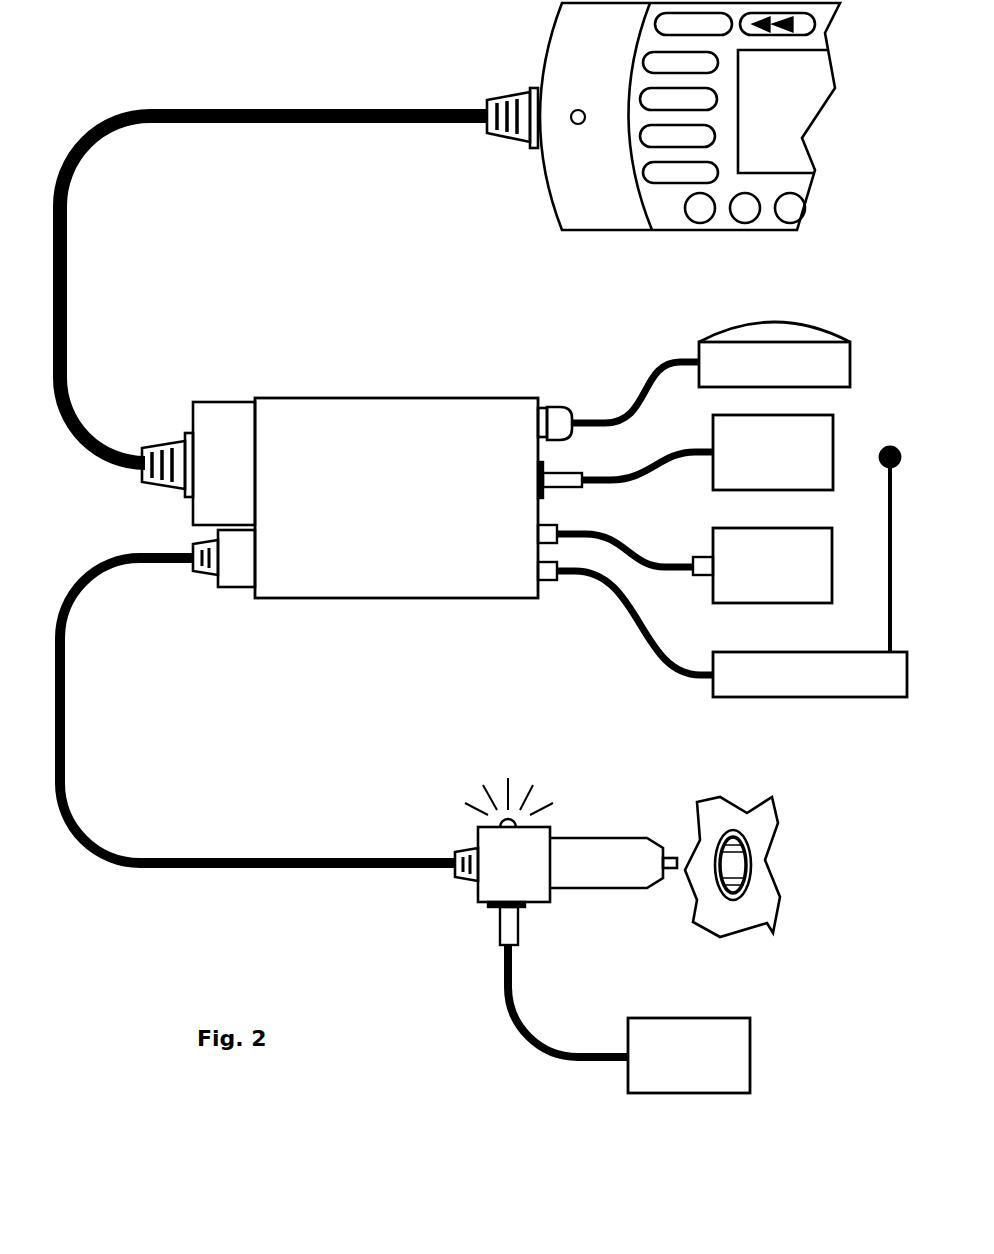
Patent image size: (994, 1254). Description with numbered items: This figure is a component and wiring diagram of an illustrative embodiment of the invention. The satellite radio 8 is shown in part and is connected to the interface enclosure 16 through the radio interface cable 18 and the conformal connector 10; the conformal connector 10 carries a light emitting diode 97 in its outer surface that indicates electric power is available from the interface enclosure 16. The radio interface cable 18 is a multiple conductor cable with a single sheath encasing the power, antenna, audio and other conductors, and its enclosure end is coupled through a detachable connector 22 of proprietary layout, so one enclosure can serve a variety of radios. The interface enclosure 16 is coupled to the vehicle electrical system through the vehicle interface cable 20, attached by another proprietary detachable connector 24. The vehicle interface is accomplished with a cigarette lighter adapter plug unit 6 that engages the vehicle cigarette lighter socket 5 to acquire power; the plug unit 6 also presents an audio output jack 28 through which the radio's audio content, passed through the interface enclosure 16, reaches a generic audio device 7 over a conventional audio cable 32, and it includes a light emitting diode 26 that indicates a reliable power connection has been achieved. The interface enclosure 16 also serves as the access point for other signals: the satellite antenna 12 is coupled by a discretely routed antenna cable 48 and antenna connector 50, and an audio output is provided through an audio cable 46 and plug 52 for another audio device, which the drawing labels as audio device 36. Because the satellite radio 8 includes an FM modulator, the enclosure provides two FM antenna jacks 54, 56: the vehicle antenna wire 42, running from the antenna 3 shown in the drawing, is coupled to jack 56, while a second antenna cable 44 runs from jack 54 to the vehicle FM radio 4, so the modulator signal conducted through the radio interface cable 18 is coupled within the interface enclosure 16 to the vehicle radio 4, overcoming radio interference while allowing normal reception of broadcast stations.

The conformal connector 10 is at (545, 50).
The satellite radio 8 is at (817, 120).
The light emitting diode 97 is at (575, 123).
The radio interface cable 18 is at (97, 147).
The detachable connector 22 is at (203, 402).
The interface enclosure 16 is at (337, 398).
The detachable connector 24 is at (230, 587).
The vehicle interface cable 20 is at (68, 797).
The cigarette lighter adapter plug unit 6 is at (477, 888).
The light emitting diode 26 is at (490, 818).
The audio output jack 28 is at (490, 907).
The audio cable 32 is at (517, 950).
The generic audio device 7 is at (650, 1018).
The vehicle cigarette lighter socket 5 is at (783, 864).
The satellite antenna 12 is at (852, 350).
The antenna cable 48 is at (653, 372).
The antenna connector 50 is at (560, 407).
The plug 52 is at (560, 472).
The audio cable 46 is at (665, 460).
The audio device 36 is at (833, 433).
The FM antenna jack 54 is at (547, 525).
The second antenna cable 44 is at (622, 540).
The vehicle FM radio 4 is at (833, 545).
The FM antenna jack 56 is at (550, 580).
The vehicle antenna wire 42 is at (638, 640).
The car antenna 3 is at (887, 598).